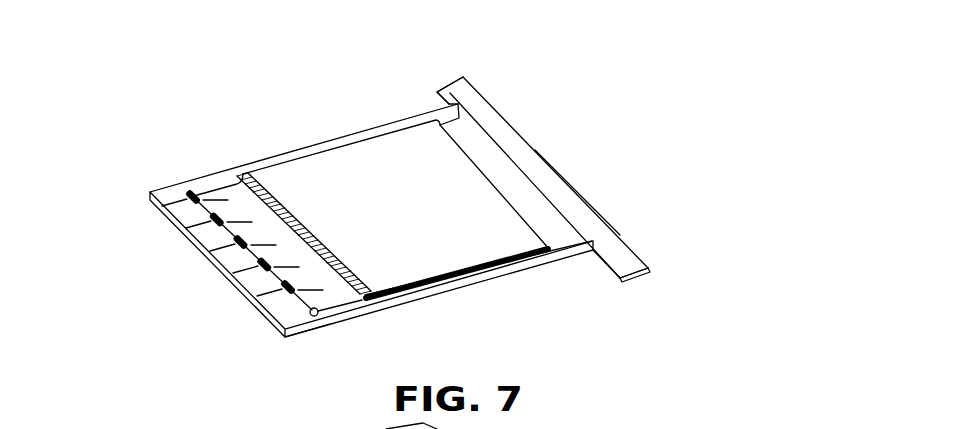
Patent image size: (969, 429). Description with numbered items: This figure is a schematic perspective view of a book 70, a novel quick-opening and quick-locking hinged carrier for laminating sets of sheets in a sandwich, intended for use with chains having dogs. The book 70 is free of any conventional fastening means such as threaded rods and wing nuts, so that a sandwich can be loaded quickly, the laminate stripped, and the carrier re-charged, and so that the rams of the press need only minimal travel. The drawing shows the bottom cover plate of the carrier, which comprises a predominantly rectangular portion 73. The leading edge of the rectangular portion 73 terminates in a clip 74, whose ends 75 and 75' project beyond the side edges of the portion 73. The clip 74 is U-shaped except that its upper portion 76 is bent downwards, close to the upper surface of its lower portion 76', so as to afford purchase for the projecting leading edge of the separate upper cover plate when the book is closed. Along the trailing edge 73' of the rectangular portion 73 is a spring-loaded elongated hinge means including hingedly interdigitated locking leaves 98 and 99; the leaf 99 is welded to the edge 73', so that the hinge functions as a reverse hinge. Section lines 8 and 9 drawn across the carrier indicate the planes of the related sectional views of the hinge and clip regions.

The section line 8- 8 is at (490, 28).
The section line 9- 9 is at (758, 283).
The book 70 is at (238, 303).
The rectangular portion 73 is at (457, 296).
The edge 73' is at (288, 353).
The clip 74 is at (602, 207).
The end of clip 75 is at (673, 260).
The end of clip 75' is at (405, 72).
The upper portion of clip 76 is at (621, 197).
The lower portion of clip 76' is at (579, 280).
The locking leaf 98 is at (302, 241).
The locking leaf 99 is at (170, 207).